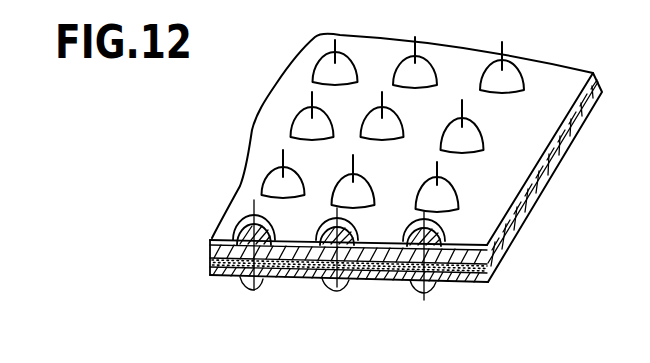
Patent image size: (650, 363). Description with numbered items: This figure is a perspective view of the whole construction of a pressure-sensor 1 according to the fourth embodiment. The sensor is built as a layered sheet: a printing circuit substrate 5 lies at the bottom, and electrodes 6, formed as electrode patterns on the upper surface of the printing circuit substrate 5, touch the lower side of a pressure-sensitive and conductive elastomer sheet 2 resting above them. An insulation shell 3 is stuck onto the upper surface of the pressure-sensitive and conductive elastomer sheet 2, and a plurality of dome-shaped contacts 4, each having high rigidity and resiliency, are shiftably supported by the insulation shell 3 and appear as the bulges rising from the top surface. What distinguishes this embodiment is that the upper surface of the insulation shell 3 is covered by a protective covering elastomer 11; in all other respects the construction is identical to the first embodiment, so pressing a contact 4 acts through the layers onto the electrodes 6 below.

The pressure-sensor 1 is at (604, 85).
The pressure-sensitive and conductive elastomer sheet 2 is at (212, 263).
The insulation shell 3 is at (210, 250).
The contact 4 is at (437, 162).
The printing circuit substrate 5 is at (218, 278).
The electrodes 6 is at (253, 288).
The protective covering elastomer 11 is at (228, 222).